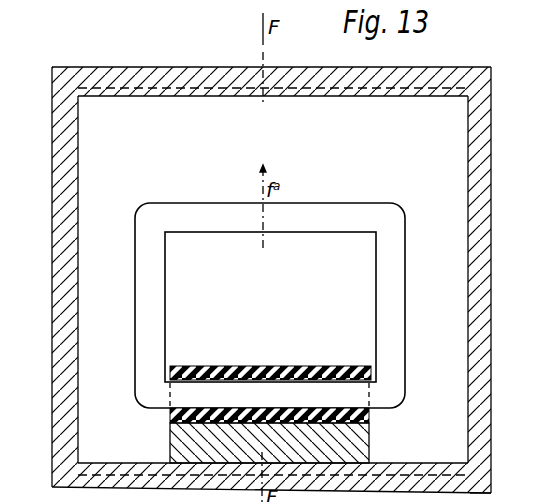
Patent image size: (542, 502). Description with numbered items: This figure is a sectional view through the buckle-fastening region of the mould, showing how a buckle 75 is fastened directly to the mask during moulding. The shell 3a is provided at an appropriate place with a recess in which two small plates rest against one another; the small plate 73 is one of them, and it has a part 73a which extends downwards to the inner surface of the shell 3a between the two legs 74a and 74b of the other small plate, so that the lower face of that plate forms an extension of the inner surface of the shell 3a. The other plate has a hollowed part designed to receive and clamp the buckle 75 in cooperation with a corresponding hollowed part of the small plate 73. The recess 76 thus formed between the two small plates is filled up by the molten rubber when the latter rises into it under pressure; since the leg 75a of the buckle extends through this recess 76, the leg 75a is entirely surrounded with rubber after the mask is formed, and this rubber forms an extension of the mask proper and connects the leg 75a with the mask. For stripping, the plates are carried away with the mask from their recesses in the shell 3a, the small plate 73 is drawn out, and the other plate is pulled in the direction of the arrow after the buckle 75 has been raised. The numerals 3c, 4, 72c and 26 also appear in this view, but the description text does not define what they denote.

The shell 3a is at (143, 80).
The casing corner portion 3c is at (478, 479).
The casing wall hatching / body 4 is at (302, 107).
The leg of the small plate 74a is at (90, 364).
The leg of the small plate 74b is at (452, 397).
The small plate 73 is at (124, 500).
The part of the small plate 73a is at (216, 450).
The bottom wall centre line 72c is at (273, 488).
The cup-shaped shell 26 is at (155, 409).
The buckle 75 is at (293, 367).
The leg of the buckle 75a is at (205, 393).
The recess 76 is at (299, 368).